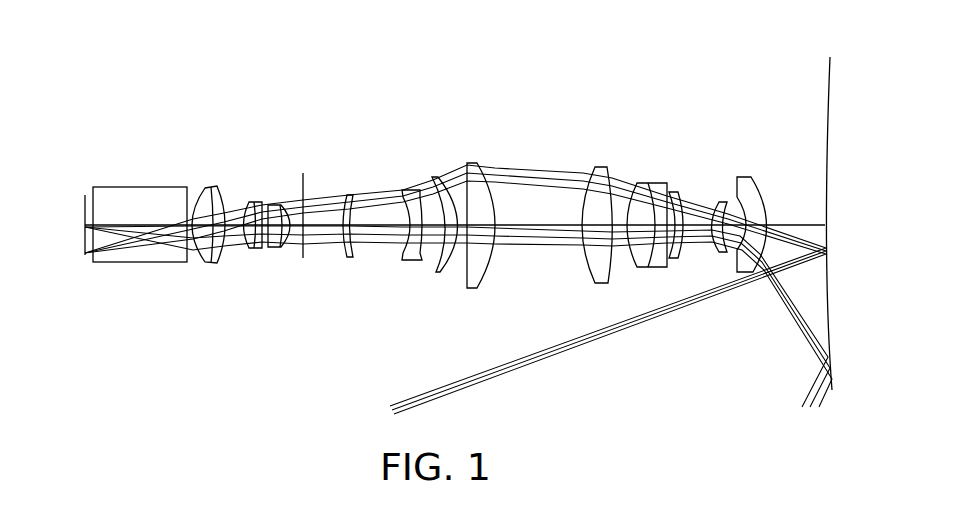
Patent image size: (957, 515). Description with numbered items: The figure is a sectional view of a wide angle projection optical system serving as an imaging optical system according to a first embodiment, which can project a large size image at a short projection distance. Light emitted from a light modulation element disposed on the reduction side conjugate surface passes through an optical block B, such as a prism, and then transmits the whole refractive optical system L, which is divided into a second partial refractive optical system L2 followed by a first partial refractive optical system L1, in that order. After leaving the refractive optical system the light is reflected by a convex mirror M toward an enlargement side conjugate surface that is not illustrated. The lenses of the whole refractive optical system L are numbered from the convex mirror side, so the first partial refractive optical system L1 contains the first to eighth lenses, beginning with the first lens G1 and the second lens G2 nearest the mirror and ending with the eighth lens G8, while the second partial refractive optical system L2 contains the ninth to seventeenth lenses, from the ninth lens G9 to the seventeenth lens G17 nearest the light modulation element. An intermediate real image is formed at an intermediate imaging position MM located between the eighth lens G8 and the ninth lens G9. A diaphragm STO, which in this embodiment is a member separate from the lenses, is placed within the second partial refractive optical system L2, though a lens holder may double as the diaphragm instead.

The whole refractive optical system L is at (608, 55).
The first partial refractive optical system L1 is at (765, 113).
The second partial refractive optical system L2 is at (420, 113).
The optical block B is at (137, 263).
The seventeenth lens G17 is at (202, 185).
The diaphragm STO is at (305, 258).
The ninth lens G9 is at (404, 189).
The eighth lens G8 is at (452, 222).
The intermediate imaging position MM is at (432, 254).
The second lens G2 is at (713, 203).
The first lens G1 is at (745, 178).
The convex mirror M is at (832, 82).